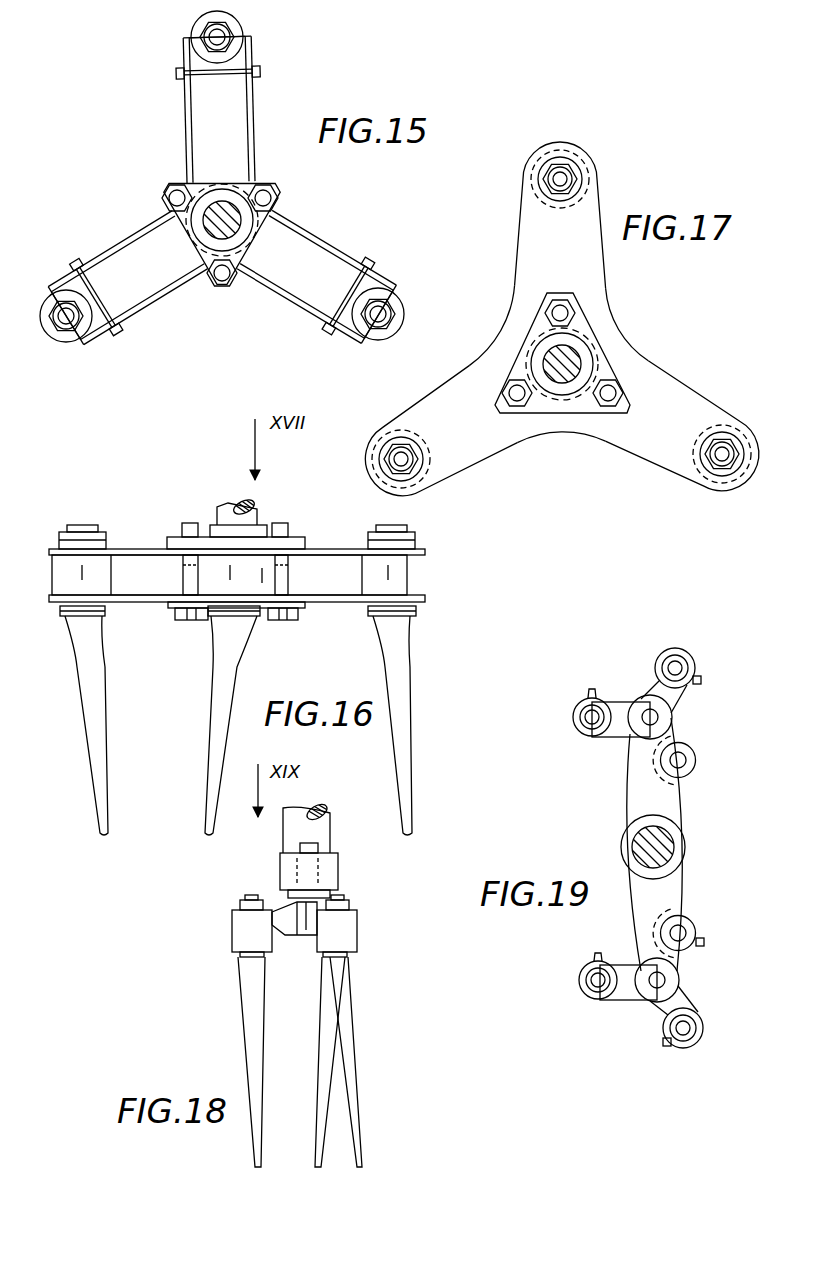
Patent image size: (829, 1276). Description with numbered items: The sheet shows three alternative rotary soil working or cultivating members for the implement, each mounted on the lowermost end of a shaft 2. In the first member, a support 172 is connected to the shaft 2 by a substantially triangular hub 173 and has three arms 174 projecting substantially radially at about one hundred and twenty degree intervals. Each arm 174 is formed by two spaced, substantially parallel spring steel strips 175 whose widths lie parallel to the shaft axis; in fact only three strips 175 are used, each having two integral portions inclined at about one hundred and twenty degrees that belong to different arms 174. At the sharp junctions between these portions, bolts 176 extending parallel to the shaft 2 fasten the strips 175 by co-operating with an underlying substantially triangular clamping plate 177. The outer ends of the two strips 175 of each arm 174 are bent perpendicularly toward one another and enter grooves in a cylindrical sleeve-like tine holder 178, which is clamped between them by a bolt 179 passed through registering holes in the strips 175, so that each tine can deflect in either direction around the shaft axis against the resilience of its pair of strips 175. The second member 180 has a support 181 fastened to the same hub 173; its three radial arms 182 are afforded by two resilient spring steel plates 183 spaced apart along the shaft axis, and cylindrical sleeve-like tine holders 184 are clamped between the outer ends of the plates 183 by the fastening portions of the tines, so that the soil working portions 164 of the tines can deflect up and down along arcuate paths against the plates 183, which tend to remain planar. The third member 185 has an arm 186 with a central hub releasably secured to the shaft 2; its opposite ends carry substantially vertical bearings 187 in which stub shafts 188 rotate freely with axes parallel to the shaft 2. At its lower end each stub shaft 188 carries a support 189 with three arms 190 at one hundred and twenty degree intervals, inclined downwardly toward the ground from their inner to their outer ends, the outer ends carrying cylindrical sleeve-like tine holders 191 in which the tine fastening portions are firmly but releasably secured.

In FIG. 15, the shaft 2 is at (228, 230).
In FIG. 17, the shaft 2 is at (550, 363).
In FIG. 16, the shaft 2 is at (226, 503).
In FIG. 18, the shaft 2 is at (328, 812).
In FIG. 19, the shaft 2 is at (631, 845).
In FIG. 16, the soil working portions 164 is at (217, 708).
In FIG. 18, the soil working portions 164 is at (358, 1117).
In FIG. 19, the soil working portions 164 is at (686, 684).
In FIG. 15, the support 172 is at (222, 201).
In FIG. 15, the substantially triangular hub 173 is at (227, 168).
In FIG. 17, the substantially triangular hub 173 is at (593, 348).
In FIG. 16, the substantially triangular hub 173 is at (291, 537).
In FIG. 15, the arms 174 is at (128, 235).
In FIG. 15, the resilient strips 175 is at (243, 97).
In FIG. 15, the bolts 176 is at (278, 190).
In FIG. 17, the bolts 176 is at (500, 397).
In FIG. 16, the bolts 176 is at (192, 620).
In FIG. 16, the clamping plate 177 is at (171, 609).
In FIG. 15, the tine holder 178 is at (234, 24).
In FIG. 15, the bolt 179 is at (176, 78).
In FIG. 16, the rotary soil working member 180 is at (265, 720).
In FIG. 17, the support 181 is at (561, 319).
In FIG. 16, the support 181 is at (136, 547).
In FIG. 17, the arms 182 is at (530, 227).
In FIG. 16, the arms 182 is at (50, 528).
In FIG. 17, the plates 183 is at (641, 458).
In FIG. 16, the plates 183 is at (346, 543).
In FIG. 17, the tine holders 184 is at (562, 158).
In FIG. 16, the tine holders 184 is at (413, 579).
In FIG. 18, the rotary soil working member 185 is at (318, 1057).
In FIG. 19, the rotary soil working member 185 is at (662, 847).
In FIG. 18, the arm 186 is at (281, 867).
In FIG. 19, the arm 186 is at (629, 788).
In FIG. 18, the bearings 187 is at (330, 870).
In FIG. 19, the bearings 187 is at (660, 757).
In FIG. 18, the stub shafts 188 is at (304, 847).
In FIG. 19, the stub shafts 188 is at (658, 717).
In FIG. 18, the support 189 is at (357, 1003).
In FIG. 19, the support 189 is at (611, 667).
In FIG. 18, the arms 190 is at (283, 938).
In FIG. 19, the arms 190 is at (621, 704).
In FIG. 18, the tine holders 191 is at (247, 930).
In FIG. 19, the tine holders 191 is at (576, 728).